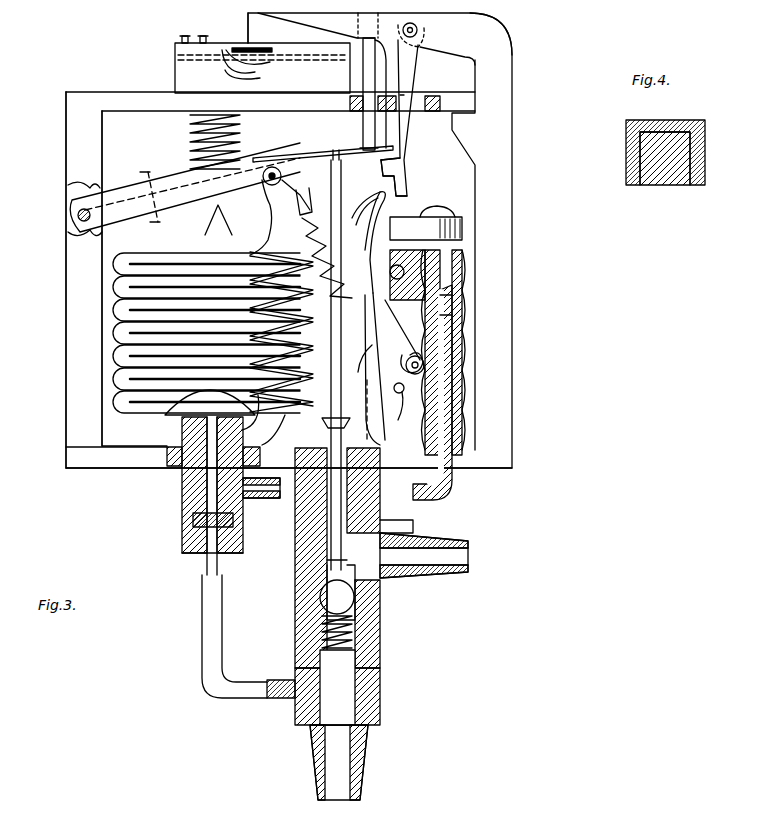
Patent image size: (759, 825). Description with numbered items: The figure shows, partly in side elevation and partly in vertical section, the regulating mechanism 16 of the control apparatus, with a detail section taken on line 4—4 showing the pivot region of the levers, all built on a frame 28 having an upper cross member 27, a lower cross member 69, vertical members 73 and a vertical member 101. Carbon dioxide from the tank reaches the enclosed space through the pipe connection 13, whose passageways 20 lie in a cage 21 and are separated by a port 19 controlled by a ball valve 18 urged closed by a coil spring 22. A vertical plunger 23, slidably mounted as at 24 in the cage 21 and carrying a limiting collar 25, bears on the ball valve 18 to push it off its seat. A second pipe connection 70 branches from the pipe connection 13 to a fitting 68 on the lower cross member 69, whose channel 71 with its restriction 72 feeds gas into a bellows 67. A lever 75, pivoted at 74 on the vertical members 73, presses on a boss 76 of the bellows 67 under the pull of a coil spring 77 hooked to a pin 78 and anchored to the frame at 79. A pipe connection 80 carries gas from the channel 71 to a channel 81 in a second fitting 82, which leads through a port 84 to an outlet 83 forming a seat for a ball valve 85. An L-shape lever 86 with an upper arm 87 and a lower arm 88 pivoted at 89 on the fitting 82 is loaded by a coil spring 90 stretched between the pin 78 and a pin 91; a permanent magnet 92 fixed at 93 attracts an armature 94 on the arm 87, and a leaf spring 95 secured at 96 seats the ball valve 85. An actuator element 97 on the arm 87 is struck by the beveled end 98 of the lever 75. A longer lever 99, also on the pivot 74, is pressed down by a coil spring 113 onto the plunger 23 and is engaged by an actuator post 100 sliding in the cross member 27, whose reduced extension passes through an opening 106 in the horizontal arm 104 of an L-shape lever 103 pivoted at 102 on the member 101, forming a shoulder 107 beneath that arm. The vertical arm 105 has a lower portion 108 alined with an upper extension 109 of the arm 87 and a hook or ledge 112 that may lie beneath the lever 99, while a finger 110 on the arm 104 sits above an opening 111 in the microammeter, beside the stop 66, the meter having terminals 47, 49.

In FIG. 3, the section line 4— 4 is at (145, 200).
In FIG. 3, the pipe connection 13 is at (455, 560).
In FIG. 3, the mechanism 16 is at (560, 460).
In FIG. 3, the ball valve 18 is at (372, 614).
In FIG. 3, the port 19 is at (380, 585).
In FIG. 3, the passageways 20 is at (300, 563).
In FIG. 3, the cage 21 is at (300, 600).
In FIG. 3, the coil spring 22 is at (378, 648).
In FIG. 3, the plunger 23 is at (300, 540).
In FIG. 3, the slidable mounting 24 is at (380, 518).
In FIG. 3, the collar 25 is at (345, 420).
In FIG. 3, the upper cross member 27 is at (118, 100).
In FIG. 3, the frame 28 is at (70, 346).
In FIG. 3, the terminal 47 is at (203, 34).
In FIG. 3, the terminal 49 is at (185, 34).
In FIG. 3, the stop 66 is at (246, 50).
In FIG. 3, the bellows 67 is at (118, 295).
In FIG. 3, the fitting 68 is at (183, 496).
In FIG. 3, the lower cross member 69 is at (125, 470).
In FIG. 3, the pipe connection 70 is at (205, 653).
In FIG. 3, the channel 71 is at (185, 506).
In FIG. 3, the restriction 72 is at (244, 520).
In FIG. 3, the vertical members 73 is at (70, 140).
In FIG. 3, the pivot 74 is at (76, 210).
In FIG. 3, the lever 75 is at (172, 205).
In FIG. 4, the lever 75 is at (690, 187).
In FIG. 3, the boss 76 is at (220, 208).
In FIG. 3, the coil spring 77 is at (290, 332).
In FIG. 3, the pin 78 is at (272, 166).
In FIG. 3, the spring anchorage 79 is at (280, 455).
In FIG. 3, the pipe connection 80 is at (400, 500).
In FIG. 3, the channel 81 is at (455, 395).
In FIG. 3, the second fitting 82 is at (450, 345).
In FIG. 3, the outlet 83 is at (392, 268).
In FIG. 3, the port 84 is at (400, 262).
In FIG. 3, the ball valve 85 is at (430, 283).
In FIG. 3, the L-shape lever 86 is at (369, 369).
In FIG. 3, the upper arm 87 is at (384, 337).
In FIG. 3, the lower arm 88 is at (408, 416).
In FIG. 3, the pivot 89 is at (405, 388).
In FIG. 3, the coil spring 90 is at (334, 285).
In FIG. 3, the pin 91 is at (420, 365).
In FIG. 3, the permanent magnet 92 is at (450, 222).
In FIG. 3, the magnet fixing 93 is at (440, 206).
In FIG. 3, the armature 94 is at (370, 218).
In FIG. 3, the leaf spring 95 is at (437, 295).
In FIG. 3, the leaf spring securement 96 is at (440, 315).
In FIG. 3, the actuator element 97 is at (322, 218).
In FIG. 3, the beveled outer end 98 is at (300, 175).
In FIG. 3, the lever 99 is at (305, 150).
In FIG. 4, the lever 99 is at (690, 120).
In FIG. 3, the actuator post 100 is at (363, 80).
In FIG. 3, the vertical member 101 is at (505, 130).
In FIG. 3, the pivotal support 102 is at (416, 26).
In FIG. 3, the L-shape lever 103 is at (418, 60).
In FIG. 3, the horizontal arm 104 is at (318, 20).
In FIG. 3, the vertical arm 105 is at (415, 87).
In FIG. 3, the opening 106 is at (380, 20).
In FIG. 3, the shoulder 107 is at (378, 40).
In FIG. 3, the lower portion 108 is at (410, 185).
In FIG. 3, the upper extension 109 is at (365, 195).
In FIG. 3, the finger 110 is at (250, 33).
In FIG. 3, the opening 111 is at (262, 62).
In FIG. 3, the hook or ledge 112 is at (405, 163).
In FIG. 3, the coil spring 113 is at (190, 146).